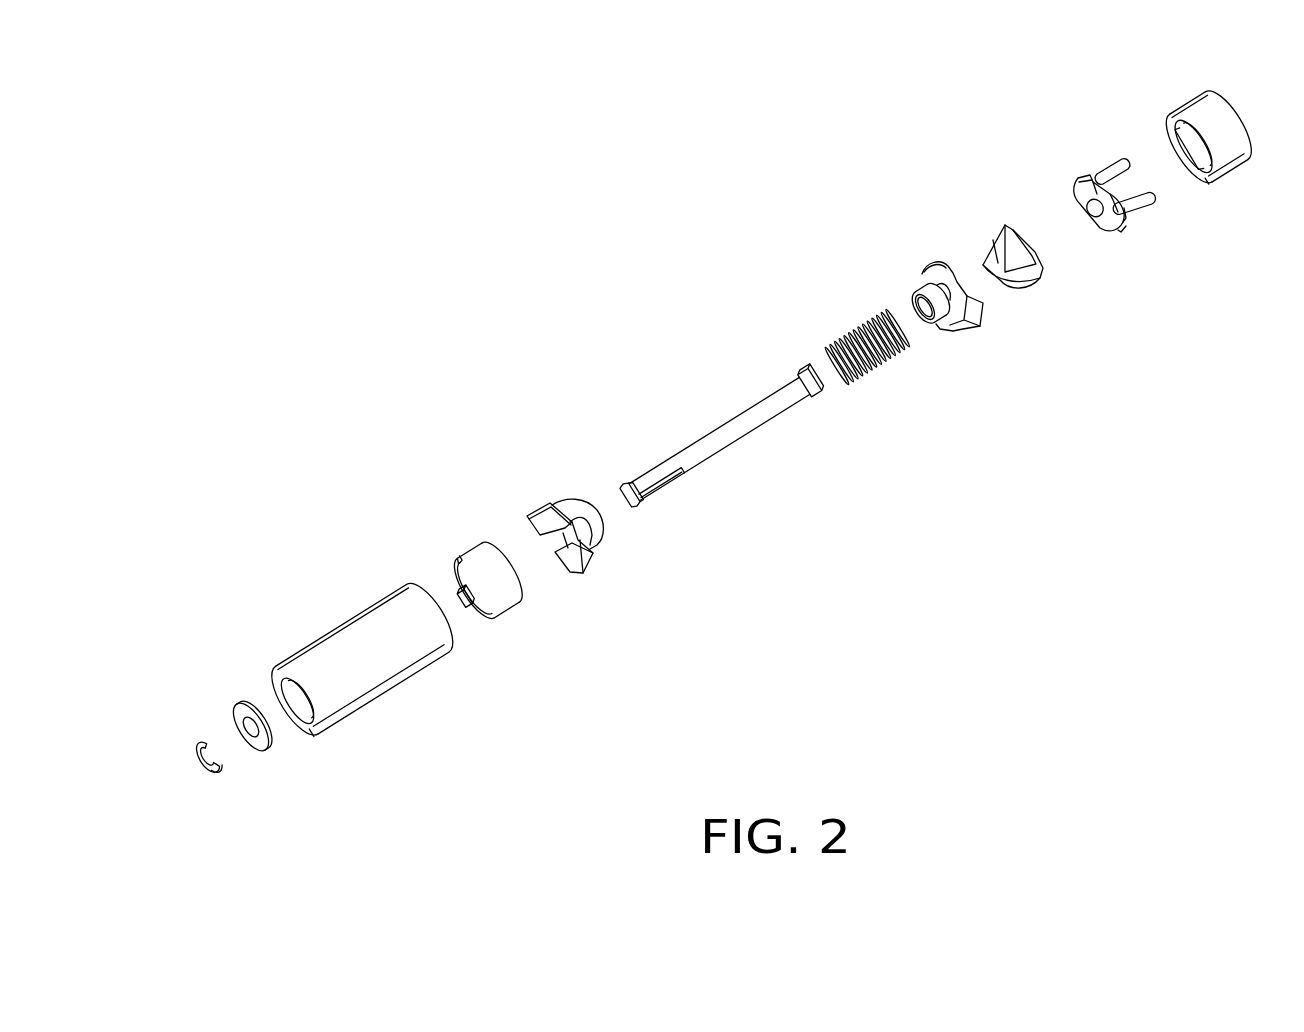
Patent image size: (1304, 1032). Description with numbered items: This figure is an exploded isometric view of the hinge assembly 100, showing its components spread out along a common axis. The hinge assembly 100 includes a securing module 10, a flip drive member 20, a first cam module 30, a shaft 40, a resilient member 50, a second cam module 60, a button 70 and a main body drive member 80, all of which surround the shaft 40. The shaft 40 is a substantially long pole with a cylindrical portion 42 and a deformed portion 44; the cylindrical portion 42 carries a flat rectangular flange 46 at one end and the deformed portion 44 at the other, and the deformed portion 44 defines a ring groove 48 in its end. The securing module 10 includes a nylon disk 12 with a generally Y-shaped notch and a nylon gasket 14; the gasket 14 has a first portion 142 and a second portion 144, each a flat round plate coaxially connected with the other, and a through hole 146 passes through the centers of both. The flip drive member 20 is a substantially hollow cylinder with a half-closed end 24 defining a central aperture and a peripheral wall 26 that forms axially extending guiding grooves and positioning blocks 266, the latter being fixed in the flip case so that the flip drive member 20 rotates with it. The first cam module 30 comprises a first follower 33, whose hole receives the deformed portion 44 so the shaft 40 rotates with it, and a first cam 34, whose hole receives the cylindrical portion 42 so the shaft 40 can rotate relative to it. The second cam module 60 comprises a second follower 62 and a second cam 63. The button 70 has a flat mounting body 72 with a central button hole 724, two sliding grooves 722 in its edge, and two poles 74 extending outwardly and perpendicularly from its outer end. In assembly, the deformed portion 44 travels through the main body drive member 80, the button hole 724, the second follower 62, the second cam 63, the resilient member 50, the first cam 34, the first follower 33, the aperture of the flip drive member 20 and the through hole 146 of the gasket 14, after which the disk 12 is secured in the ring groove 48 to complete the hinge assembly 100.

The hinge assembly 100 is at (772, 91).
The securing module 10 is at (288, 816).
The disk 12 is at (223, 769).
The gasket 14 is at (275, 754).
The first portion 142 is at (247, 724).
The second portion 144 is at (257, 703).
The through hole 146 is at (239, 722).
The flip drive member 20 is at (322, 624).
The half-closed end 24 is at (315, 730).
The peripheral wall 26 is at (397, 612).
The positioning block 266 is at (432, 656).
The first cam module 30 is at (535, 426).
The first follower 33 is at (481, 558).
The first cam 34 is at (548, 504).
The shaft 40 is at (749, 448).
The cylindrical portion 42 is at (748, 420).
The deformed portion 44 is at (666, 463).
The flange 46 is at (804, 369).
The ring groove 48 is at (637, 480).
The resilient member 50 is at (845, 338).
The second cam module 60 is at (970, 144).
The second follower 62 is at (1005, 228).
The second cam 63 is at (935, 268).
The button 70 is at (1080, 84).
The mounting body 72 is at (1080, 177).
The sliding groove 722 is at (1124, 212).
The button hole 724 is at (1088, 206).
The pole 74 is at (1110, 168).
The main body drive member 80 is at (1221, 123).